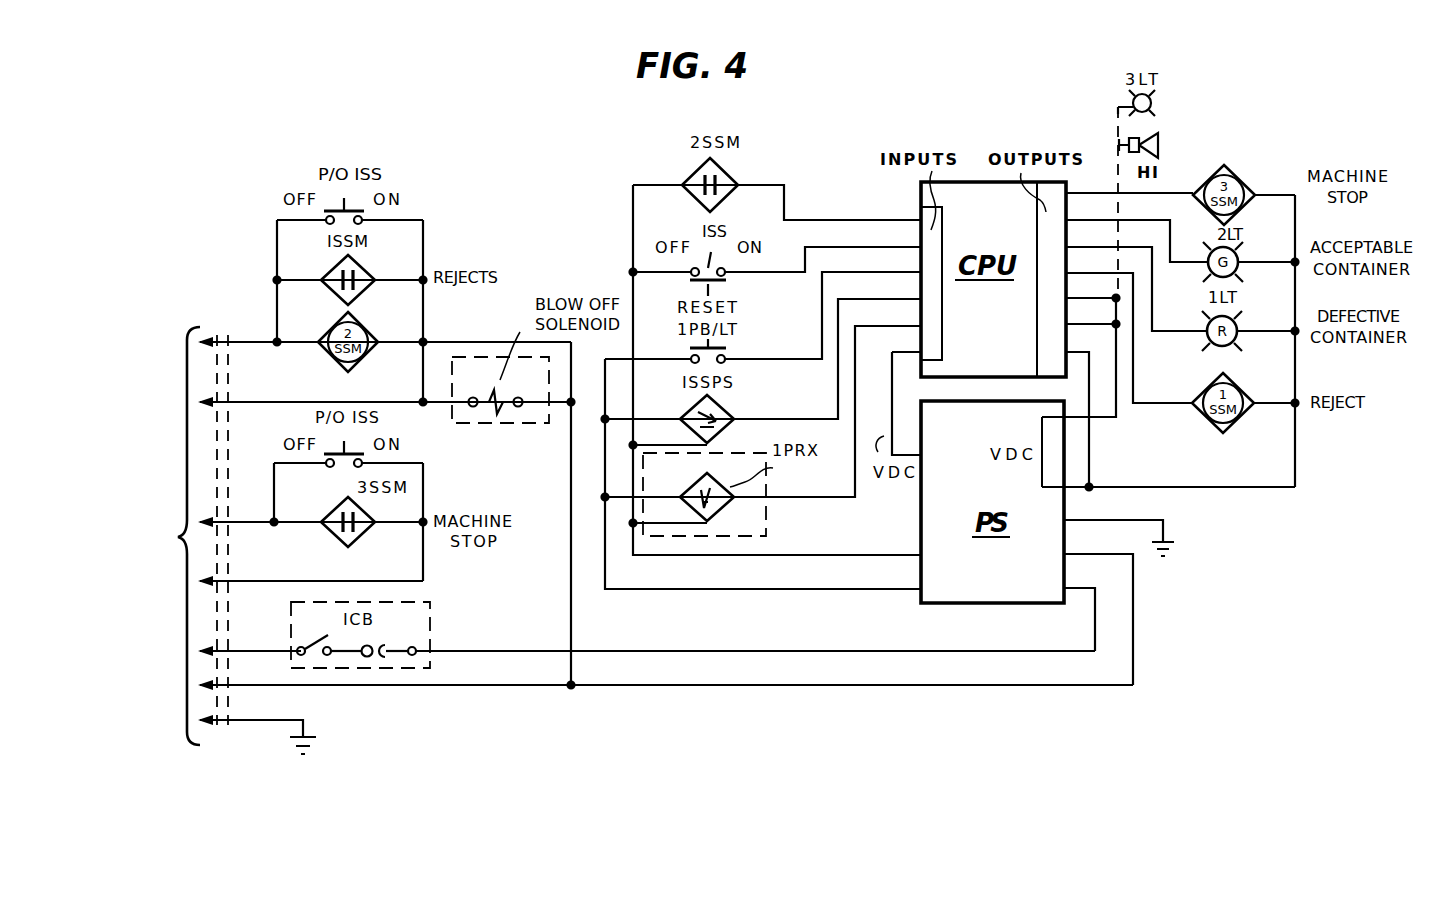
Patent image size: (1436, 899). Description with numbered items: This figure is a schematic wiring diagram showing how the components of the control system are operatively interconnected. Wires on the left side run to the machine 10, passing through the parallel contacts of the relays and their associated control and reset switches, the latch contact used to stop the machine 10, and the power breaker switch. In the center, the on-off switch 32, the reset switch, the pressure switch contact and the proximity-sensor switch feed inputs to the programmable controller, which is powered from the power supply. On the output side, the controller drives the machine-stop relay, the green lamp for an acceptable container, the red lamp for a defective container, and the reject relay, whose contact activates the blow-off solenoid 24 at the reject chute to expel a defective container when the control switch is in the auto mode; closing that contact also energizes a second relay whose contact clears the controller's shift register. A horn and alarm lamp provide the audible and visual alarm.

The machine 10 is at (119, 536).
The blow-off solenoid 24 is at (509, 415).
The on-off switch 32 is at (718, 282).